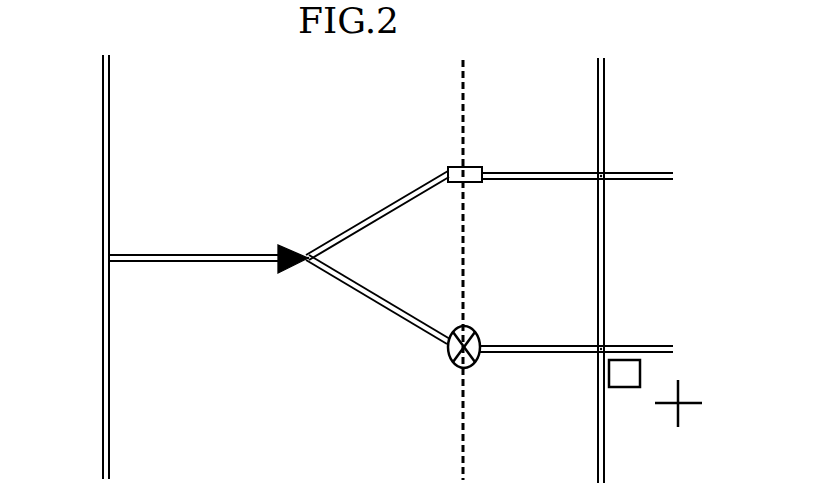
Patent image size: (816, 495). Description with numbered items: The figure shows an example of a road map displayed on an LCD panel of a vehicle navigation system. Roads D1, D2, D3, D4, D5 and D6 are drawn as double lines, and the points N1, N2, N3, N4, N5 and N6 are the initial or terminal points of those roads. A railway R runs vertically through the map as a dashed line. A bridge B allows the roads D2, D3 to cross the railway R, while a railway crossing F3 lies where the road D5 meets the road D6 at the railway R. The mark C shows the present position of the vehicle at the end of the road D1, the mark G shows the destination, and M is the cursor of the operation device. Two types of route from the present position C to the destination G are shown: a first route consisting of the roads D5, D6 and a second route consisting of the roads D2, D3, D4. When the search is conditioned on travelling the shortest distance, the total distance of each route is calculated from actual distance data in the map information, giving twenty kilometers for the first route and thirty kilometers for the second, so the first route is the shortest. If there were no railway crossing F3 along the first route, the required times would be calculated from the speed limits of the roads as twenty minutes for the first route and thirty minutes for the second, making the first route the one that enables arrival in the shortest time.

The initial or terminal point of road N1 is at (102, 252).
The road D1 is at (185, 253).
The mark showing the present position of the vehicle C is at (288, 245).
The initial or terminal point of road N2 is at (307, 270).
The road D2 is at (382, 208).
The bridge B is at (475, 185).
The initial or terminal point of road N3 is at (460, 164).
The road D3 is at (543, 171).
The railway R is at (467, 87).
The road D4 is at (607, 258).
The initial or terminal point of road N4 is at (608, 168).
The initial or terminal point of road N6 is at (608, 343).
The railway crossing F3 is at (473, 324).
The initial or terminal point of road N5 is at (453, 363).
The road D5 is at (385, 312).
The road D6 is at (538, 355).
The mark showing a destination G is at (628, 388).
The cursor of the operation device M is at (690, 400).